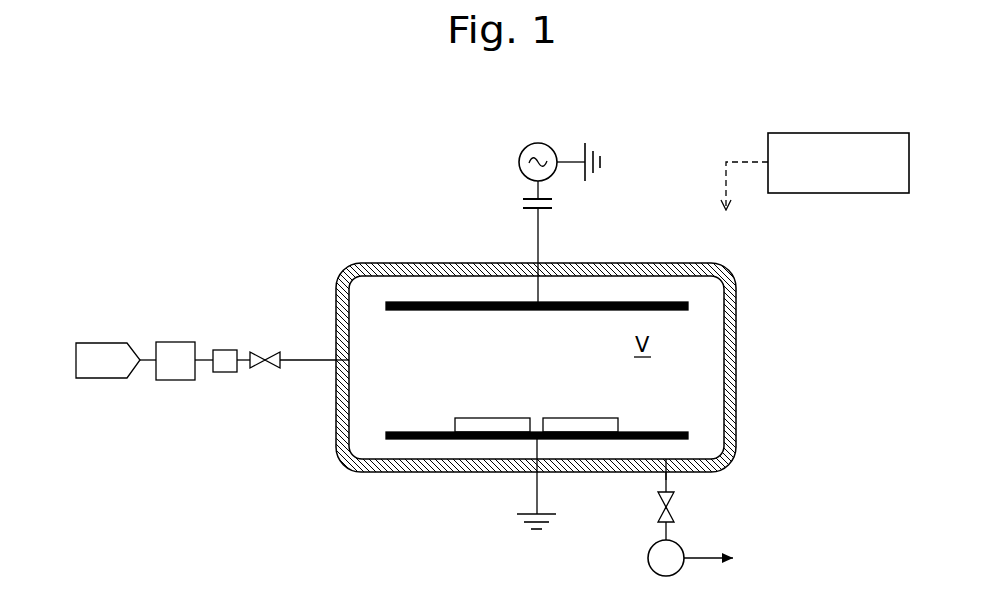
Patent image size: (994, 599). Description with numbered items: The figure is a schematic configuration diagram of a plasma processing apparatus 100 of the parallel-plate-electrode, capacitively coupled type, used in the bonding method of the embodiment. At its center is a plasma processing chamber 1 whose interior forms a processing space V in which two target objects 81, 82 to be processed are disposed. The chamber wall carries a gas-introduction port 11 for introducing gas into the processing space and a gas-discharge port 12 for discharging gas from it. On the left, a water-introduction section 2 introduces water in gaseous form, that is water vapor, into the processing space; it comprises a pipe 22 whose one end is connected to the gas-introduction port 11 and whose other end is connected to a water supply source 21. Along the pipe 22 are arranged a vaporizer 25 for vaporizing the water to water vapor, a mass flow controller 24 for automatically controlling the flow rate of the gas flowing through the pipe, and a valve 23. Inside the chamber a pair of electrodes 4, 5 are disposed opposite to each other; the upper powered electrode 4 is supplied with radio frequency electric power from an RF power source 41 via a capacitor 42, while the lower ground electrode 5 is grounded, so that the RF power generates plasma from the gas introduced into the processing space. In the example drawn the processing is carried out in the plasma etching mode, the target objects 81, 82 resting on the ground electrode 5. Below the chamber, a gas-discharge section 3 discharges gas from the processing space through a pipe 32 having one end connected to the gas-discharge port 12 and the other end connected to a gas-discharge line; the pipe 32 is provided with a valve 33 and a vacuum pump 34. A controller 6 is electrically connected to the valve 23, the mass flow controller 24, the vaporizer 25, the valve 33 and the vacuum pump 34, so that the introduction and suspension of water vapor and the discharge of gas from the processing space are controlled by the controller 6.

The plasma processing apparatus 100 is at (104, 243).
The plasma processing chamber 1 is at (389, 265).
The water-introduction section 2 is at (65, 330).
The water supply source 21 is at (92, 380).
The pipe 22 is at (296, 358).
The valve 23 is at (257, 351).
The mass flow controller 24 is at (222, 349).
The vaporizer 25 is at (175, 341).
The gas-introduction port 11 is at (349, 361).
The gas-discharge port 12 is at (667, 462).
The powered electrode 4 is at (431, 311).
The ground electrode 5 is at (422, 431).
The target object 81 is at (493, 417).
The target object 82 is at (581, 417).
The radio frequency power source 41 is at (519, 147).
The capacitor 42 is at (528, 210).
The gas-discharge section 3 is at (783, 500).
The pipe 32 is at (661, 477).
The valve 33 is at (675, 508).
The vacuum pump 34 is at (649, 567).
The controller 6 is at (909, 154).